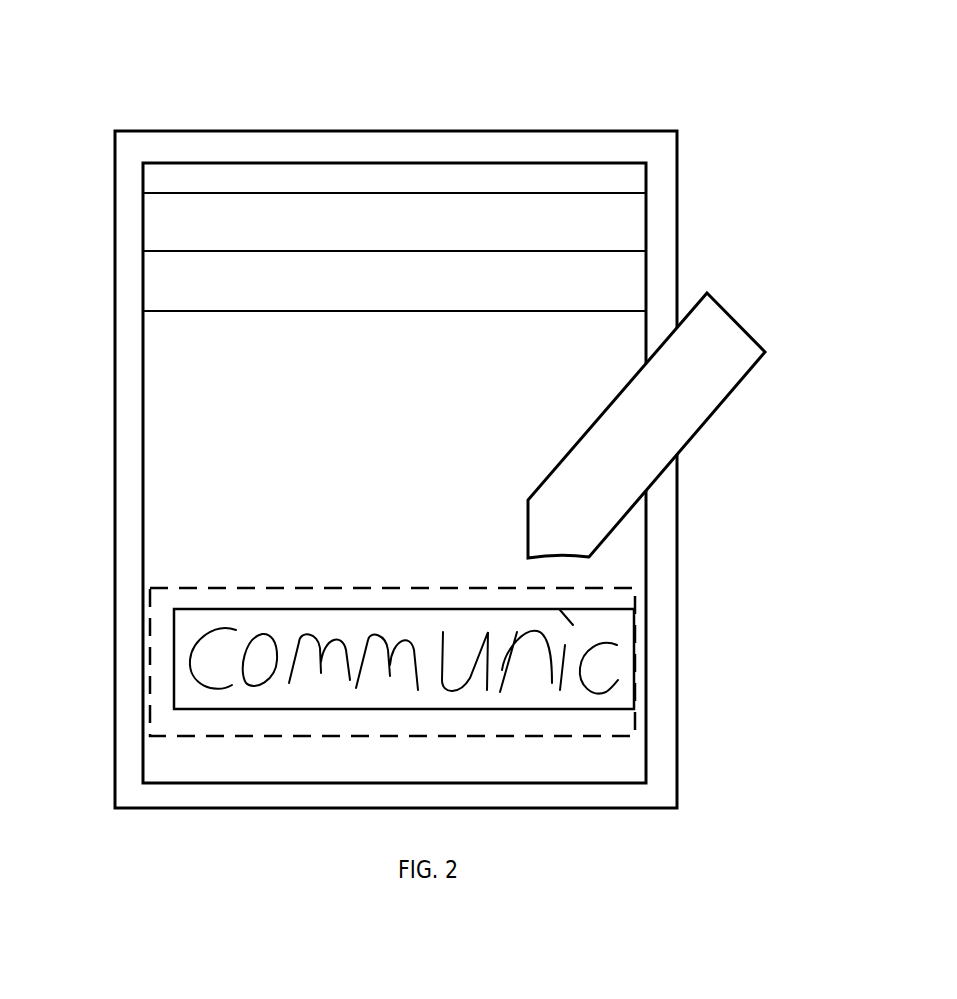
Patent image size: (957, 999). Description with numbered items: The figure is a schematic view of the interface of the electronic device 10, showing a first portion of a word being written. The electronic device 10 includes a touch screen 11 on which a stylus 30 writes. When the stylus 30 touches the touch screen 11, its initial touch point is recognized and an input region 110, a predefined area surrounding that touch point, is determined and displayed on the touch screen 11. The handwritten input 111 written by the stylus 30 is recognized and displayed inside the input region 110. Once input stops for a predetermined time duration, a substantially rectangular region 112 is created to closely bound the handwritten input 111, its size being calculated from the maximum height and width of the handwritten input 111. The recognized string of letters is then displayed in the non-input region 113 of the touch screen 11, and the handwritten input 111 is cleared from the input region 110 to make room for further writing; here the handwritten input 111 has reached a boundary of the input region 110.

The electronic device 10 is at (203, 70).
The touch screen 11 is at (616, 161).
The stylus 30 is at (734, 318).
The input region 110 is at (203, 585).
The handwritten input 111 is at (605, 687).
The rectangular region 112 is at (577, 607).
The non-input region 113 is at (155, 246).